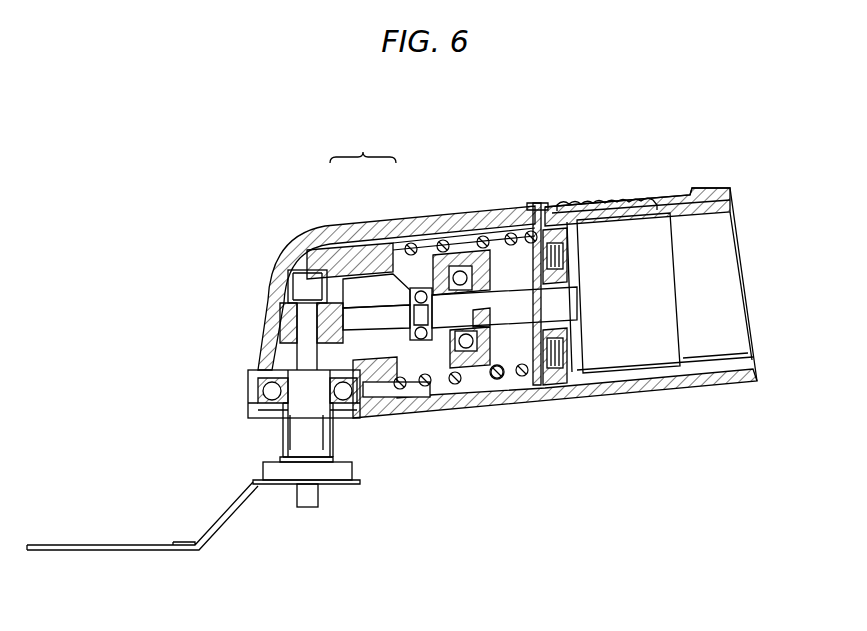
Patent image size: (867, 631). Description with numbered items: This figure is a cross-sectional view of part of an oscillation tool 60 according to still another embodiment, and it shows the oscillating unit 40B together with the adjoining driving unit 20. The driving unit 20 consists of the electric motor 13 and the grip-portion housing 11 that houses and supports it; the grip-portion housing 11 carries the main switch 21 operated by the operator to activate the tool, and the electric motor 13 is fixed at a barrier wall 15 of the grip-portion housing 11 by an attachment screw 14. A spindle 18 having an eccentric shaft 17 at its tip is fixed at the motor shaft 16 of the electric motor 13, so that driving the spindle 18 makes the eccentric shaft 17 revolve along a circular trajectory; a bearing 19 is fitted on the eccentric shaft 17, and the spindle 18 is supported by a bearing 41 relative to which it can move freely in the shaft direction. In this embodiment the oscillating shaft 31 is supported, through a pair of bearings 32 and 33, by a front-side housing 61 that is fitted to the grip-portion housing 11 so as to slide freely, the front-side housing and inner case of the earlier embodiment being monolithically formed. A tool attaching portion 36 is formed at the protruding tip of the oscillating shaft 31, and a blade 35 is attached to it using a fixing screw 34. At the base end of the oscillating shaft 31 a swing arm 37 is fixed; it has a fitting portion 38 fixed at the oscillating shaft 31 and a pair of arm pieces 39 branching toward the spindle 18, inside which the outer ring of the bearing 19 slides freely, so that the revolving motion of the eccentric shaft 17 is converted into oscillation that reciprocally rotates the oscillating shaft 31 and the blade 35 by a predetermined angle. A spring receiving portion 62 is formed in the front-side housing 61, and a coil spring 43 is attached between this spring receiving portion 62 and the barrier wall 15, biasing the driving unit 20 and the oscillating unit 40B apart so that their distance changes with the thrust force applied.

The oscillation tool 60 is at (158, 202).
The oscillating unit 40B is at (283, 244).
The swing arm 37 is at (363, 146).
The fitting portion 38 is at (332, 275).
The arm pieces 39 is at (366, 312).
The bearing 19 is at (418, 300).
The bearing 41 is at (455, 285).
The spindle 18 is at (489, 320).
The motor shaft 16 is at (514, 306).
The main switch 21 is at (603, 198).
The grip-portion housing 11 is at (672, 197).
The driving unit 20 is at (730, 226).
The bearing 32 is at (286, 298).
The front-side housing 61 is at (262, 335).
The bearing 33 is at (262, 388).
The oscillating shaft 31 is at (287, 430).
The blade 35 is at (121, 545).
The tool attaching portion 36 is at (350, 471).
The fixing screw 34 is at (318, 500).
The spring receiving portion 62 is at (402, 400).
The eccentric shaft 17 is at (422, 345).
The coil spring 43 is at (497, 380).
The attachment screw 14 is at (555, 382).
The barrier wall 15 is at (563, 378).
The electric motor 13 is at (655, 337).